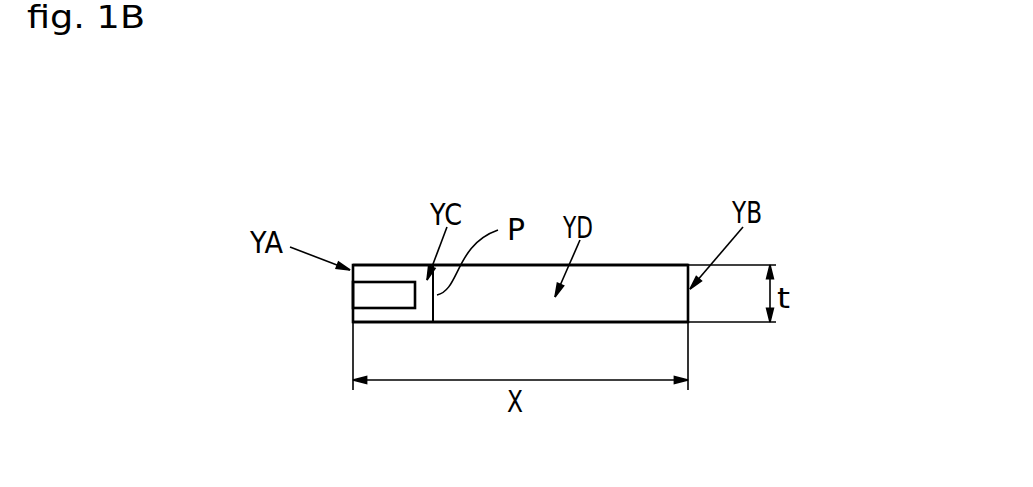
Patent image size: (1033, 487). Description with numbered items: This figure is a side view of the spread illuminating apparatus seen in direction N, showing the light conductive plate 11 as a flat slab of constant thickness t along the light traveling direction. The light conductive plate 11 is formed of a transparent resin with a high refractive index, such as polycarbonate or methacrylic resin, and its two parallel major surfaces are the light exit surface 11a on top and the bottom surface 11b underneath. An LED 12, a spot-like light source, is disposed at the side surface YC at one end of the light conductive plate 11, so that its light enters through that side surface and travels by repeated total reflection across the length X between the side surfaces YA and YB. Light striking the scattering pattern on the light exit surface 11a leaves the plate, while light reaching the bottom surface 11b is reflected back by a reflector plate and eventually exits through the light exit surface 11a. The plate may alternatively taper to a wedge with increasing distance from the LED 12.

The light conductive plate 11 is at (608, 232).
The light exit surface 11a is at (619, 265).
The bottom surface 11b is at (545, 322).
The LED 12 is at (385, 300).